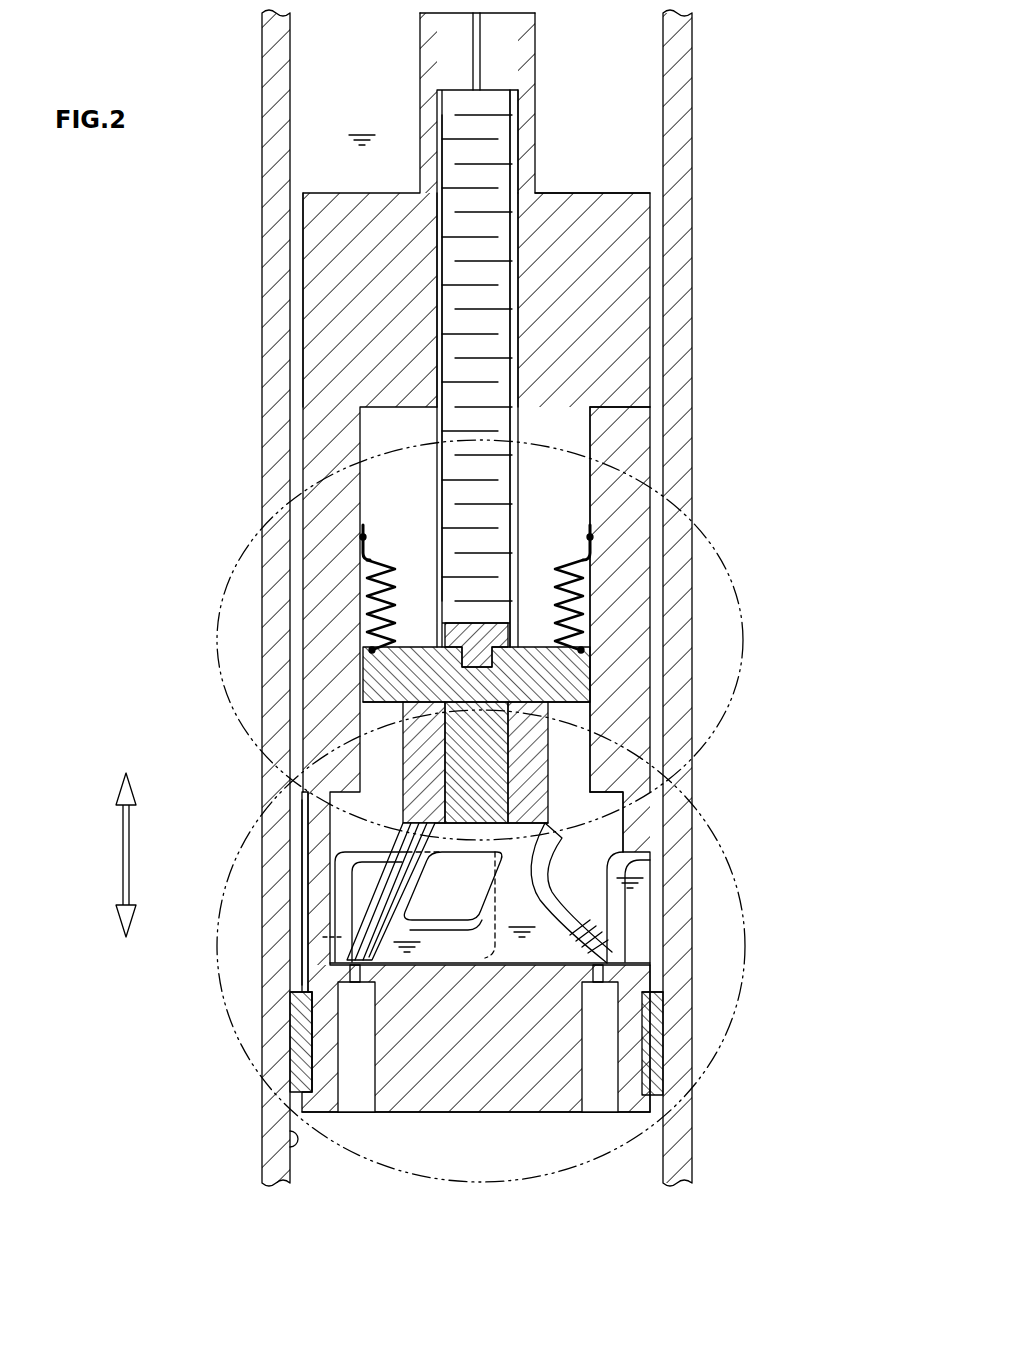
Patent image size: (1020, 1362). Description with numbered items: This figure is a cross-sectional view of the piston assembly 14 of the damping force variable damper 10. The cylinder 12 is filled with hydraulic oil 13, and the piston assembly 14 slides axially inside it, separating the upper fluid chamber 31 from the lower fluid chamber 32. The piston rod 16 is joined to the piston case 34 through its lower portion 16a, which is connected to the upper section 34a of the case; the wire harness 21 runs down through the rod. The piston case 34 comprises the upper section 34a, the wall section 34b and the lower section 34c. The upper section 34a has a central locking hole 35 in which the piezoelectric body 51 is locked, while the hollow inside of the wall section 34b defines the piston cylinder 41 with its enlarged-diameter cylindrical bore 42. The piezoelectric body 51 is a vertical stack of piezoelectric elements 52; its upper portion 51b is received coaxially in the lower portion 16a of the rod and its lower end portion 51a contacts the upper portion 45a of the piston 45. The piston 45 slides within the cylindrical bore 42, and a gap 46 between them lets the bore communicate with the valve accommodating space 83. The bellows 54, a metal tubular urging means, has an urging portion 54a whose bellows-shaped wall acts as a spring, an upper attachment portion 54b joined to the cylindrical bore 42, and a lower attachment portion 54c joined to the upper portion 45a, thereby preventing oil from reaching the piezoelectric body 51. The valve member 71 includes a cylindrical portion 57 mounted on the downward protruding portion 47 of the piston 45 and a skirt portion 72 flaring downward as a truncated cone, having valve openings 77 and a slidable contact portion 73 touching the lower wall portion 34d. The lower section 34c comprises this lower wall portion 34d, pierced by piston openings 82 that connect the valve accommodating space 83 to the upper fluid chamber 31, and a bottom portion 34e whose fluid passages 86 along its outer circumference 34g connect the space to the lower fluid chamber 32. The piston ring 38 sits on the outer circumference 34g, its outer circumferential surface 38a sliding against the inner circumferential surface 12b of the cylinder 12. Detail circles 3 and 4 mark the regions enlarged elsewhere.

The damping force variable damper 10 is at (234, 98).
The cylinder 12 is at (276, 206).
The inner circumferential surface of the cylinder 12b is at (290, 1140).
The hydraulic oil 13 is at (615, 173).
The piston assembly 14 is at (298, 360).
The piston rod 16 is at (530, 43).
The lower portion of the piston rod 16a is at (530, 160).
The wire harness 21 is at (472, 48).
The upper fluid chamber 31 is at (617, 110).
The lower fluid chamber 32 is at (491, 1170).
The piston case 34 is at (300, 430).
The upper section of the piston case 34a is at (615, 262).
The wall section of the piston case 34b is at (648, 510).
The lower section of the piston case 34c is at (820, 805).
The lower wall portion 34d is at (643, 830).
The bottom portion 34e is at (665, 1037).
The outer circumference of the bottom portion 34g is at (312, 993).
The locking hole 35 is at (455, 257).
The piston ring 38 is at (297, 1075).
The outer circumferential surface of the piston ring 38a is at (300, 1042).
The piston cylinder 41 is at (643, 642).
The cylindrical bore 42 is at (645, 587).
The piston 45 is at (388, 682).
The upper portion of the piston 45a is at (446, 622).
The gap 46 is at (400, 706).
The downward protruding portion 47 is at (490, 780).
The piezoelectric body 51 is at (522, 338).
The lower end portion of the piezoelectric body 51a is at (500, 622).
The upper portion of the piezoelectric body 51b is at (462, 128).
The piezoelectric elements 52 is at (483, 253).
The bellows 54 is at (351, 600).
The urging portion 54a is at (372, 594).
The upper attachment portion 54b is at (360, 537).
The lower attachment portion 54c is at (366, 655).
The cylindrical portion 57 is at (411, 745).
The valve member 71 is at (370, 878).
The skirt portion 72 is at (392, 853).
The slidable contact portion 73 is at (305, 942).
The valve openings 77 is at (437, 927).
The piston openings 82 is at (345, 905).
The valve accommodating space 83 is at (601, 855).
The fluid passages 86 is at (355, 1050).
The detail circle FIG. 3 is at (710, 1058).
The detail circle FIG. 4 is at (713, 553).